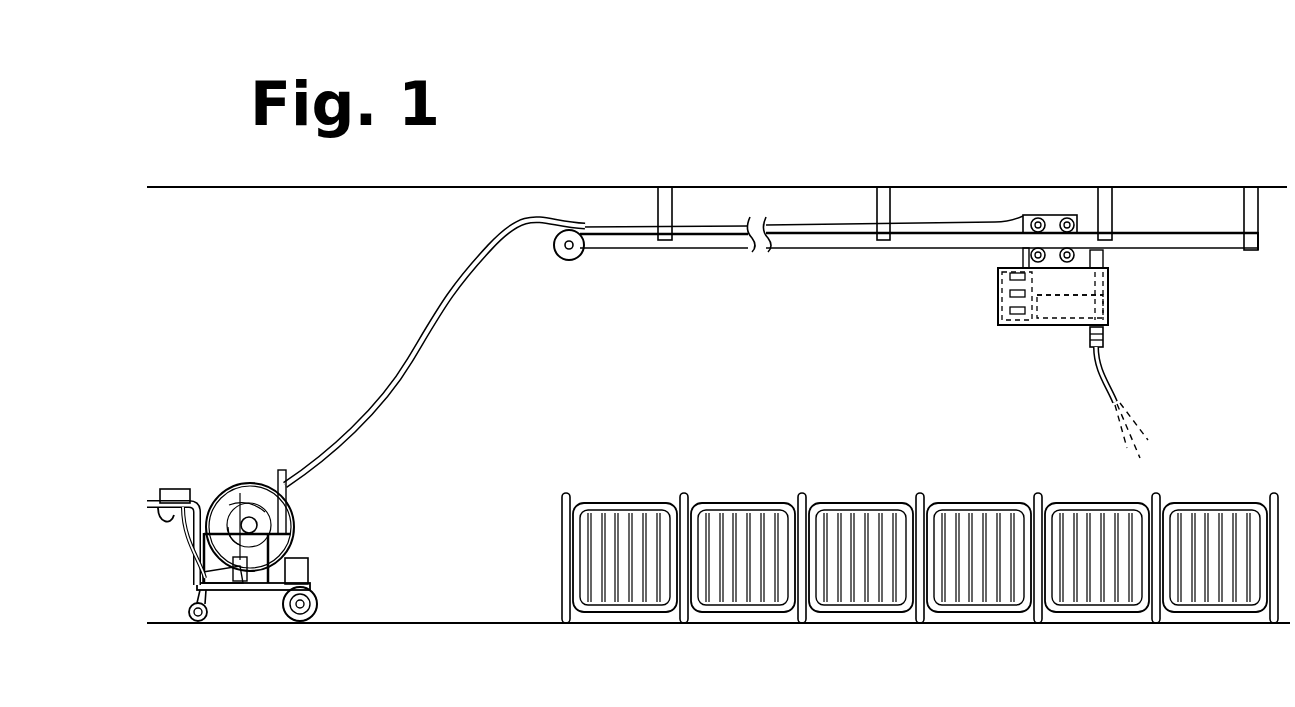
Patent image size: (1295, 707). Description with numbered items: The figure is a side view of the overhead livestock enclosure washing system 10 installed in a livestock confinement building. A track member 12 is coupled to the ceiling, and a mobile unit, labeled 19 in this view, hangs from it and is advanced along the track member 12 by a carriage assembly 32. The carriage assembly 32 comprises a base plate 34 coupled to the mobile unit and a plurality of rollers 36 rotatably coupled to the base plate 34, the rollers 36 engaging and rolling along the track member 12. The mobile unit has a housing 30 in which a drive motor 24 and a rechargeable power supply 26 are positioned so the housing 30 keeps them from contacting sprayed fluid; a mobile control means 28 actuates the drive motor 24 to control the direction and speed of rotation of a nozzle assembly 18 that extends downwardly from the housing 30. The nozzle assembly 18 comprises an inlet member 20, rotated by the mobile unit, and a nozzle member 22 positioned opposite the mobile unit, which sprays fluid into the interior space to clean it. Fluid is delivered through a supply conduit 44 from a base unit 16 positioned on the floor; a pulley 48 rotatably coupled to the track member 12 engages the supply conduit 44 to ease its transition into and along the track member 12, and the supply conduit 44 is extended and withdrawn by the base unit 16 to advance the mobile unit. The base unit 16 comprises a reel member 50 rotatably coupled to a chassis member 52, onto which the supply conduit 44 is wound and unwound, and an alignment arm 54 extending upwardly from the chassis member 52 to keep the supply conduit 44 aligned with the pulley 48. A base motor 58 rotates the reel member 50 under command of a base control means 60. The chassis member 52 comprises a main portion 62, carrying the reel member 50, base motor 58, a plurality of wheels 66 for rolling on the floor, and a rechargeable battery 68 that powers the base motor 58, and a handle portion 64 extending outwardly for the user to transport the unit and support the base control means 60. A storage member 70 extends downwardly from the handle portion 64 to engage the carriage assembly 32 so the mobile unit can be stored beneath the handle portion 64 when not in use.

The overhead livestock enclosure washing system 10 is at (275, 272).
The track member 12 is at (695, 242).
The base unit 16 is at (294, 540).
The nozzle assembly 18 is at (1143, 392).
The carriage assembly 19 is at (1070, 244).
The inlet member 20 is at (1102, 333).
The nozzle member 22 is at (1097, 370).
The drive motor 24 is at (1108, 298).
The rechargeable power supply 26 is at (1057, 322).
The mobile control means 28 is at (1000, 298).
The housing 30 is at (1003, 270).
The carriage assembly 32 is at (1072, 213).
The base plate 34 is at (1068, 200).
The rollers 36 is at (1030, 252).
The supply conduit 44 is at (807, 230).
The pulley 48 is at (558, 261).
The reel member 50 is at (245, 495).
The chassis member 52 is at (238, 600).
The alignment arm 54 is at (283, 483).
The base motor 58 is at (217, 600).
The base control means 60 is at (180, 490).
The main portion 62 is at (280, 600).
The handle portion 64 is at (160, 498).
The wheels 66 is at (187, 613).
The rechargeable battery 68 is at (297, 572).
The storage member 70 is at (162, 518).